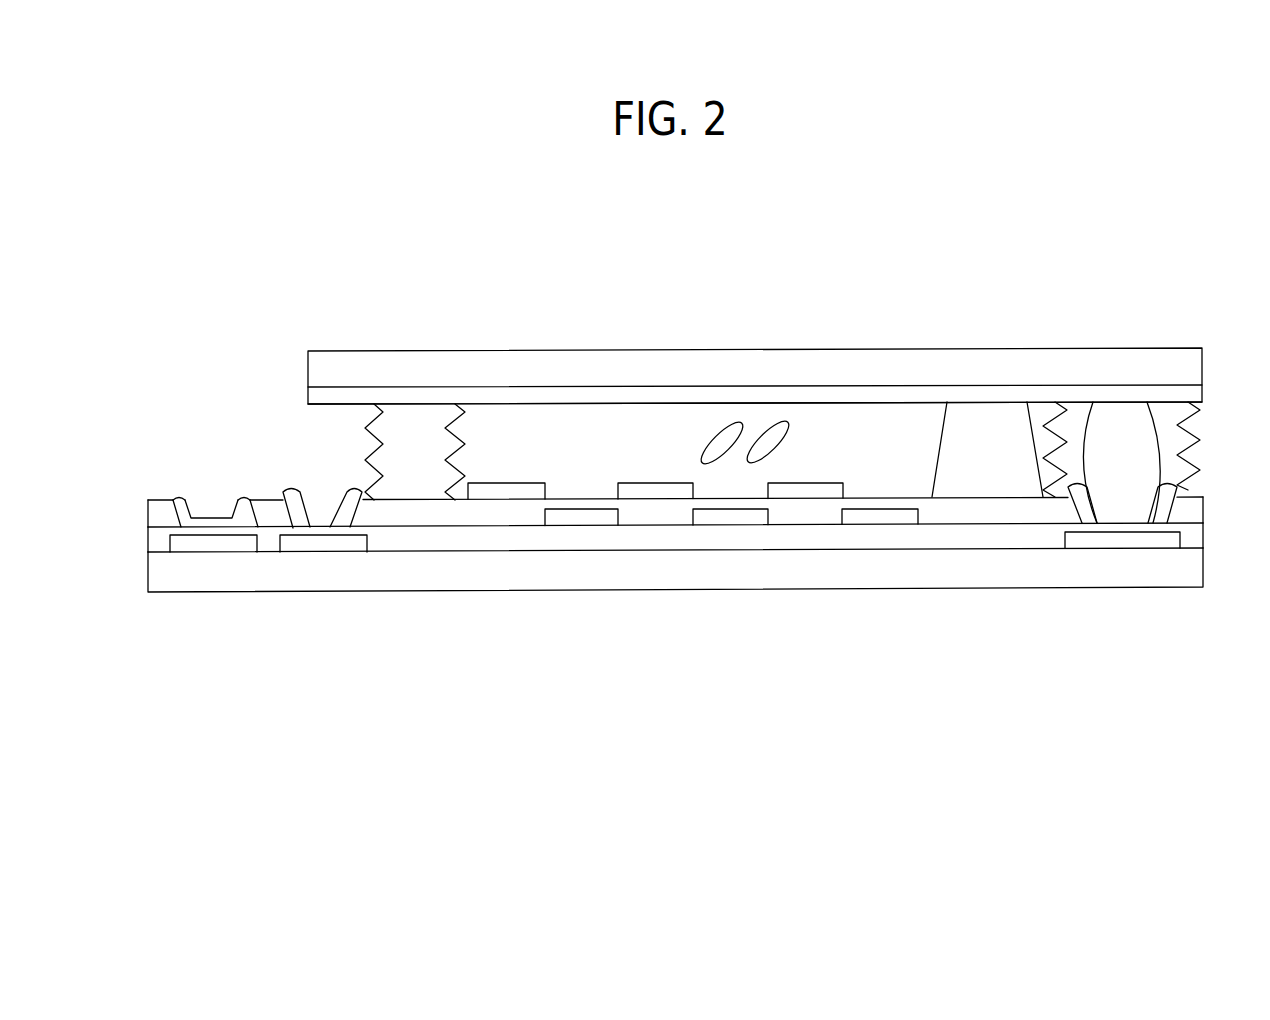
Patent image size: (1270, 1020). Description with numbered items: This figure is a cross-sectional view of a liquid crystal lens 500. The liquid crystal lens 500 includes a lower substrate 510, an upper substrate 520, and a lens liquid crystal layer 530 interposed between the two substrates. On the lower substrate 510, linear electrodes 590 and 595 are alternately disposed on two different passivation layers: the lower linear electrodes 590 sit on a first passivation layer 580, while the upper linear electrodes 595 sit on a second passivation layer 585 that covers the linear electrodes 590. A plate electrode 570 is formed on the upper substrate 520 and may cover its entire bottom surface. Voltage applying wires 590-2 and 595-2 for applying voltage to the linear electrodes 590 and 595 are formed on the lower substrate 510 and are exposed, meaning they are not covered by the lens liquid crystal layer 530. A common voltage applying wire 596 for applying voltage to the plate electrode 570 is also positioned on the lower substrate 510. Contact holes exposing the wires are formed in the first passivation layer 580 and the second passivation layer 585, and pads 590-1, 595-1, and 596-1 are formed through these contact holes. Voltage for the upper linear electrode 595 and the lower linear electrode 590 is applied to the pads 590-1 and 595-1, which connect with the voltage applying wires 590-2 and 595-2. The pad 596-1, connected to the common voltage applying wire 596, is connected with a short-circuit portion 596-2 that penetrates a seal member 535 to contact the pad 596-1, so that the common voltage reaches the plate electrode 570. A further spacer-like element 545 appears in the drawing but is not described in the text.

The liquid crystal lens 500 is at (1204, 306).
The lower substrate 510 is at (388, 592).
The upper substrate 520 is at (1030, 367).
The lens liquid crystal layer 530 is at (765, 463).
The seal member 535 is at (415, 443).
The column spacer 545 is at (985, 463).
The plate electrode 570 is at (880, 397).
The first passivation layer 580 is at (443, 538).
The second passivation layer 585 is at (497, 512).
The linear electrodes 590 is at (578, 520).
The pad 590-1 is at (187, 503).
The voltage applying wire 590-2 is at (211, 543).
The linear electrodes 595 is at (665, 492).
The pad 595-1 is at (293, 498).
The voltage applying wire 595-2 is at (323, 543).
The common voltage applying wire 596 is at (1153, 538).
The pad 596-1 is at (1163, 503).
The short-circuit portion 596-2 is at (1133, 437).